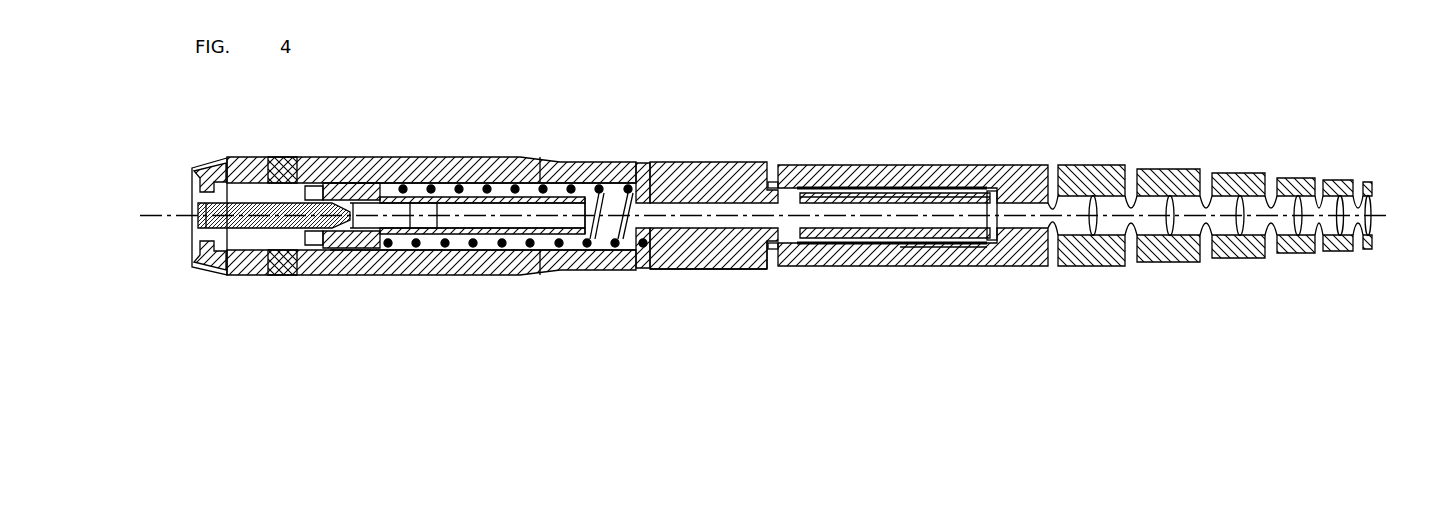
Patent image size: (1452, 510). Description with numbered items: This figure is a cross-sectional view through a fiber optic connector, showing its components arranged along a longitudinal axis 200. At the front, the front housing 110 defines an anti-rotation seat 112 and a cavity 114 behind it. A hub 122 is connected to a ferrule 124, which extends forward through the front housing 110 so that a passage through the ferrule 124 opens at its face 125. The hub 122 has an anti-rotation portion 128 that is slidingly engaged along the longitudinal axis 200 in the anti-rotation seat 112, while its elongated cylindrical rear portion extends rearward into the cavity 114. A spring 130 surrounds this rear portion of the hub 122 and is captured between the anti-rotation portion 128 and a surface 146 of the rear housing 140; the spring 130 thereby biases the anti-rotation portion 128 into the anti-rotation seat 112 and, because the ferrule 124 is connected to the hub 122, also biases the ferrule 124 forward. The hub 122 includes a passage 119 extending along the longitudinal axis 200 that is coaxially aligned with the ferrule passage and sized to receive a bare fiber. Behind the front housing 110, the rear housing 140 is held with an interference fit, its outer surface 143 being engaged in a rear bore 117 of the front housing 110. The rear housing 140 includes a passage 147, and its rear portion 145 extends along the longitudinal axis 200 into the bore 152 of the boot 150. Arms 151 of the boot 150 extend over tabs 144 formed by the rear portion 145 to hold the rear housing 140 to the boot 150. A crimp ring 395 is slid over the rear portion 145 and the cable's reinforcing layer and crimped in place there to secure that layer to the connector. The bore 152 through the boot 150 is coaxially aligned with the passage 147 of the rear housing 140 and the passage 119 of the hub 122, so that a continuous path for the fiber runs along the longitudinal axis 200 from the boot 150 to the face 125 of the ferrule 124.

The front housing 110 is at (458, 268).
The anti-rotation seat 112 is at (341, 184).
The cavity 114 is at (477, 184).
The rear bore 117 is at (767, 258).
The passage 119 is at (523, 218).
The hub 122 is at (530, 199).
The ferrule 124 is at (250, 228).
The face 125 is at (163, 213).
The anti-rotation portion 128 is at (352, 246).
The spring 130 is at (598, 196).
The rear housing 140 is at (737, 186).
The outer surface 143 is at (682, 272).
The tabs 144 is at (797, 190).
The rear portion 145 is at (882, 197).
The surface 146 is at (645, 190).
The passage 147 is at (920, 222).
The boot 150 is at (988, 168).
The arms 151 is at (776, 183).
The bore 152 is at (1110, 203).
The longitudinal axis 200 is at (1383, 212).
The crimp ring 395 is at (960, 248).